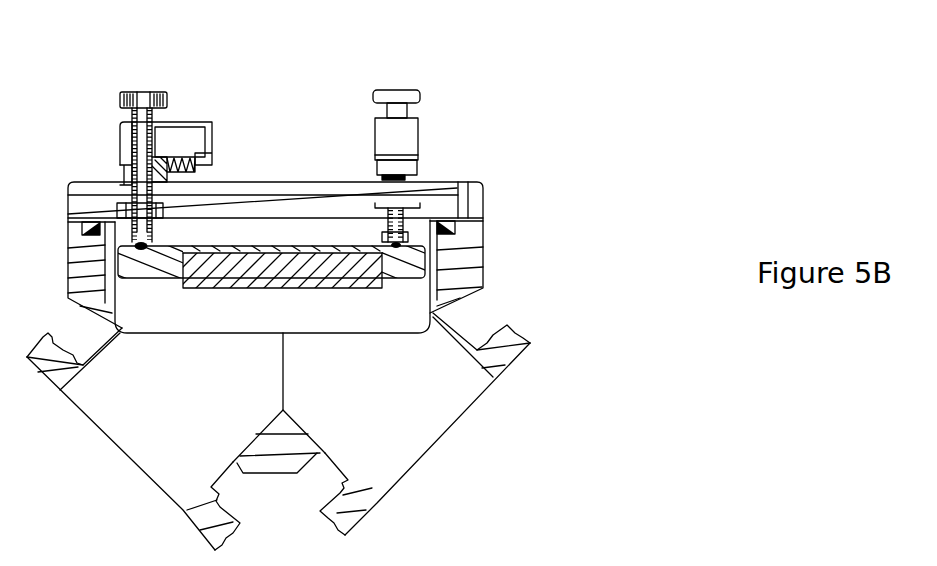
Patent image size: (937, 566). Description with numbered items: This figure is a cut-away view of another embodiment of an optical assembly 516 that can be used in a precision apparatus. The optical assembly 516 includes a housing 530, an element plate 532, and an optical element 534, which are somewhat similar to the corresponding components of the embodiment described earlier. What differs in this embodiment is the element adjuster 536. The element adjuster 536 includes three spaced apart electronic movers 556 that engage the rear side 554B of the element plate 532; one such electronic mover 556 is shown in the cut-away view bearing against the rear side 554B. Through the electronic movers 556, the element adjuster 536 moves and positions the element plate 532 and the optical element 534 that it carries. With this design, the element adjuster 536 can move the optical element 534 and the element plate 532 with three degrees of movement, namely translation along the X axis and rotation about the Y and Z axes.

The optical assembly 516 is at (549, 207).
The housing 530 is at (490, 269).
The element plate 532 is at (216, 247).
The optical element 534 is at (287, 261).
The rear side of the element plate 554B is at (241, 246).
The element adjuster 536 is at (422, 125).
The electronic movers 556 is at (120, 141).